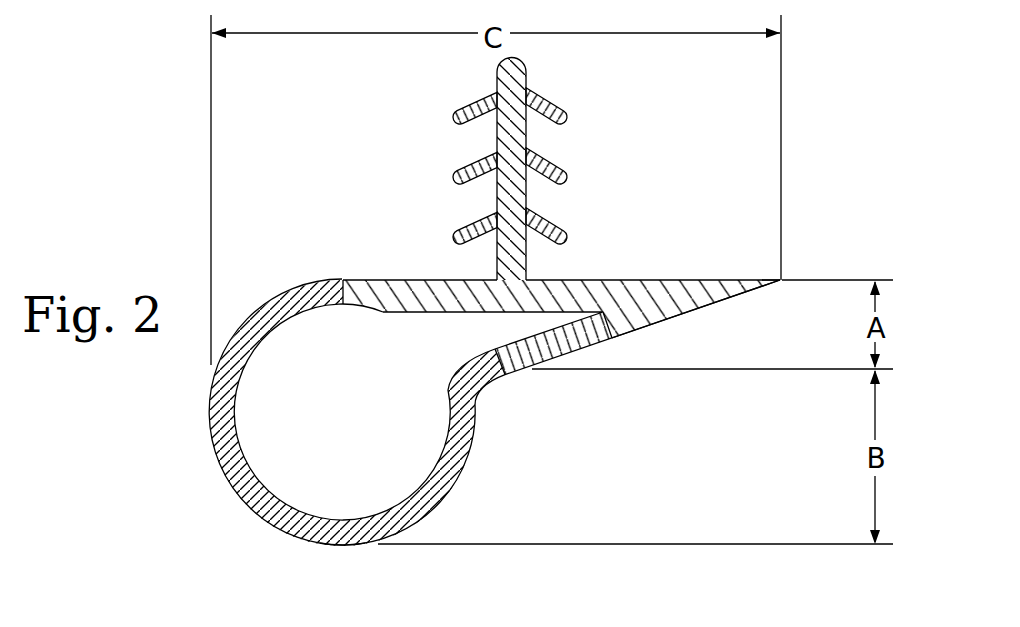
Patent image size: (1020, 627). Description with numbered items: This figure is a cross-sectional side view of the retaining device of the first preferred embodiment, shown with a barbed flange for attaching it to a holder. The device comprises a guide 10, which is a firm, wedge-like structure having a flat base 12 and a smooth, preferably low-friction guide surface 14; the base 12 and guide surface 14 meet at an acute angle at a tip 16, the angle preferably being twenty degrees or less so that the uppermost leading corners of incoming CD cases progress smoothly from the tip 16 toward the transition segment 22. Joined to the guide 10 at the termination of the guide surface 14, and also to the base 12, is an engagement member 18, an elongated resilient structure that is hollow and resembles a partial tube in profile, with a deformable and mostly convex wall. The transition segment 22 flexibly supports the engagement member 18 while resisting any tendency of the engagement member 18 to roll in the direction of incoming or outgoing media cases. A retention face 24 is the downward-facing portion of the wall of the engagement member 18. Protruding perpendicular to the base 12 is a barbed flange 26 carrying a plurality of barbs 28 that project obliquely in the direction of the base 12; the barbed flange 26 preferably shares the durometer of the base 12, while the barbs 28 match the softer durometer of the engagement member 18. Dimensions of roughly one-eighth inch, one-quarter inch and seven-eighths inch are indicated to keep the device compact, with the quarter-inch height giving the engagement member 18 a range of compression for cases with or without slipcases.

The guide 10 is at (687, 272).
The base 12 is at (432, 279).
The guide surface 14 is at (623, 335).
The tip 16 is at (782, 283).
The engagement member 18 is at (204, 439).
The transition segment 22 is at (486, 393).
The retention face 24 is at (331, 546).
The barbed flange 26 is at (496, 68).
The barbs 28 is at (563, 157).